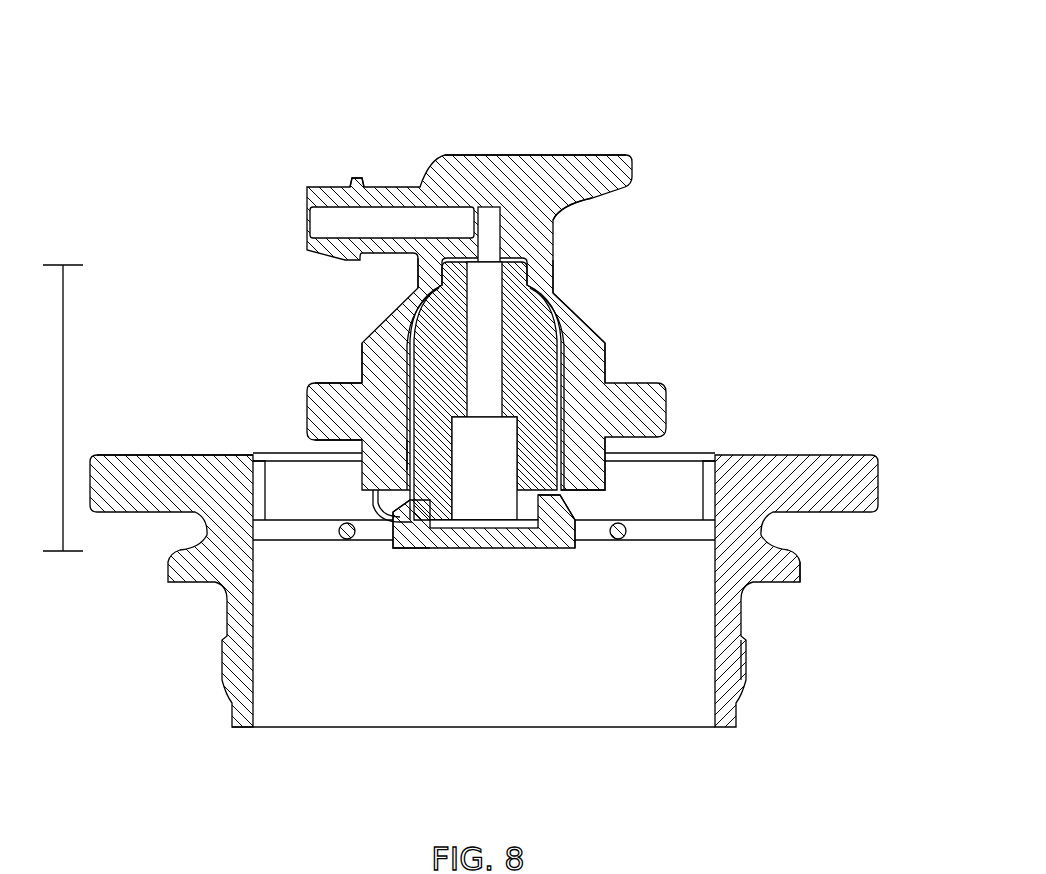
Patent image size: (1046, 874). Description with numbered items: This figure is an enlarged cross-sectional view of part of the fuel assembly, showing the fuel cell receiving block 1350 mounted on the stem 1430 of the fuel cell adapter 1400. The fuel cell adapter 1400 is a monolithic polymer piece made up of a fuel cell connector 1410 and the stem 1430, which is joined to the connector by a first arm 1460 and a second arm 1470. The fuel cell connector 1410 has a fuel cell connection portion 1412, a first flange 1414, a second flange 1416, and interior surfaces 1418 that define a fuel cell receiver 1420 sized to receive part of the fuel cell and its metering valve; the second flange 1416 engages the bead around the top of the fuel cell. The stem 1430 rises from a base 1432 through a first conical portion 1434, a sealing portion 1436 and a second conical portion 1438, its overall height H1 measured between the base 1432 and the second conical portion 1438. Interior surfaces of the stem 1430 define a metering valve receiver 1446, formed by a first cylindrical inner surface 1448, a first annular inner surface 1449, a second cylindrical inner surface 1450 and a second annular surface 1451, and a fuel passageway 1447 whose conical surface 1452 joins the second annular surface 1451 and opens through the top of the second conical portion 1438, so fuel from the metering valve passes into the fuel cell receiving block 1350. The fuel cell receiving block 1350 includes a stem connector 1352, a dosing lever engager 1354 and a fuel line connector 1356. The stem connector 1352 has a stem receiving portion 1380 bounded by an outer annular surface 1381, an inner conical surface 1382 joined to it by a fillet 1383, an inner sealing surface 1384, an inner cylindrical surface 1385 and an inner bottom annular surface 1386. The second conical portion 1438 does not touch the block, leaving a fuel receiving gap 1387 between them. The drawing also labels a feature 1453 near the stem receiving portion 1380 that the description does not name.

The fuel cell adapter 1400 is at (255, 56).
The fuel line connector 1356 is at (355, 180).
The second conical portion 1438 is at (480, 208).
The fuel receiving gap 1387 is at (497, 208).
The dosing lever engager 1354 is at (590, 156).
The inner bottom annular surface 1386 is at (553, 242).
The fuel cell receiving block 1350 is at (556, 250).
The sealing portion 1436 is at (550, 298).
The inner sealing surface 1384 is at (583, 313).
The first conical portion 1434 is at (594, 333).
The stem connector 1352 is at (593, 360).
The stem 1430 is at (617, 386).
The second annular surface 1451 is at (562, 418).
The inner cylindrical surface 1385 is at (418, 292).
The fuel passageway 1447 is at (483, 322).
The seal liner 1453 is at (403, 340).
The stem receiving portion 1380 is at (383, 360).
The conical surface 1452 is at (410, 400).
The inner conical surface 1382 is at (323, 437).
The metering valve receiver 1446 is at (462, 481).
The second cylindrical inner surface 1450 is at (522, 504).
The first flange 1414 is at (840, 498).
The second flange 1416 is at (780, 568).
The second arm 1470 is at (342, 540).
The first annular inner surface 1449 is at (447, 528).
The first cylindrical inner surface 1448 is at (538, 528).
The base 1432 is at (547, 540).
The first arm 1460 is at (618, 542).
The outer annular surface 1381 is at (378, 496).
The fillet 1383 is at (407, 516).
The fuel cell connector 1410 is at (236, 669).
The fuel cell connection portion 1412 is at (737, 667).
The interior surfaces 1418 is at (253, 672).
The fuel cell receiver 1420 is at (582, 690).
The height H1 is at (63, 388).